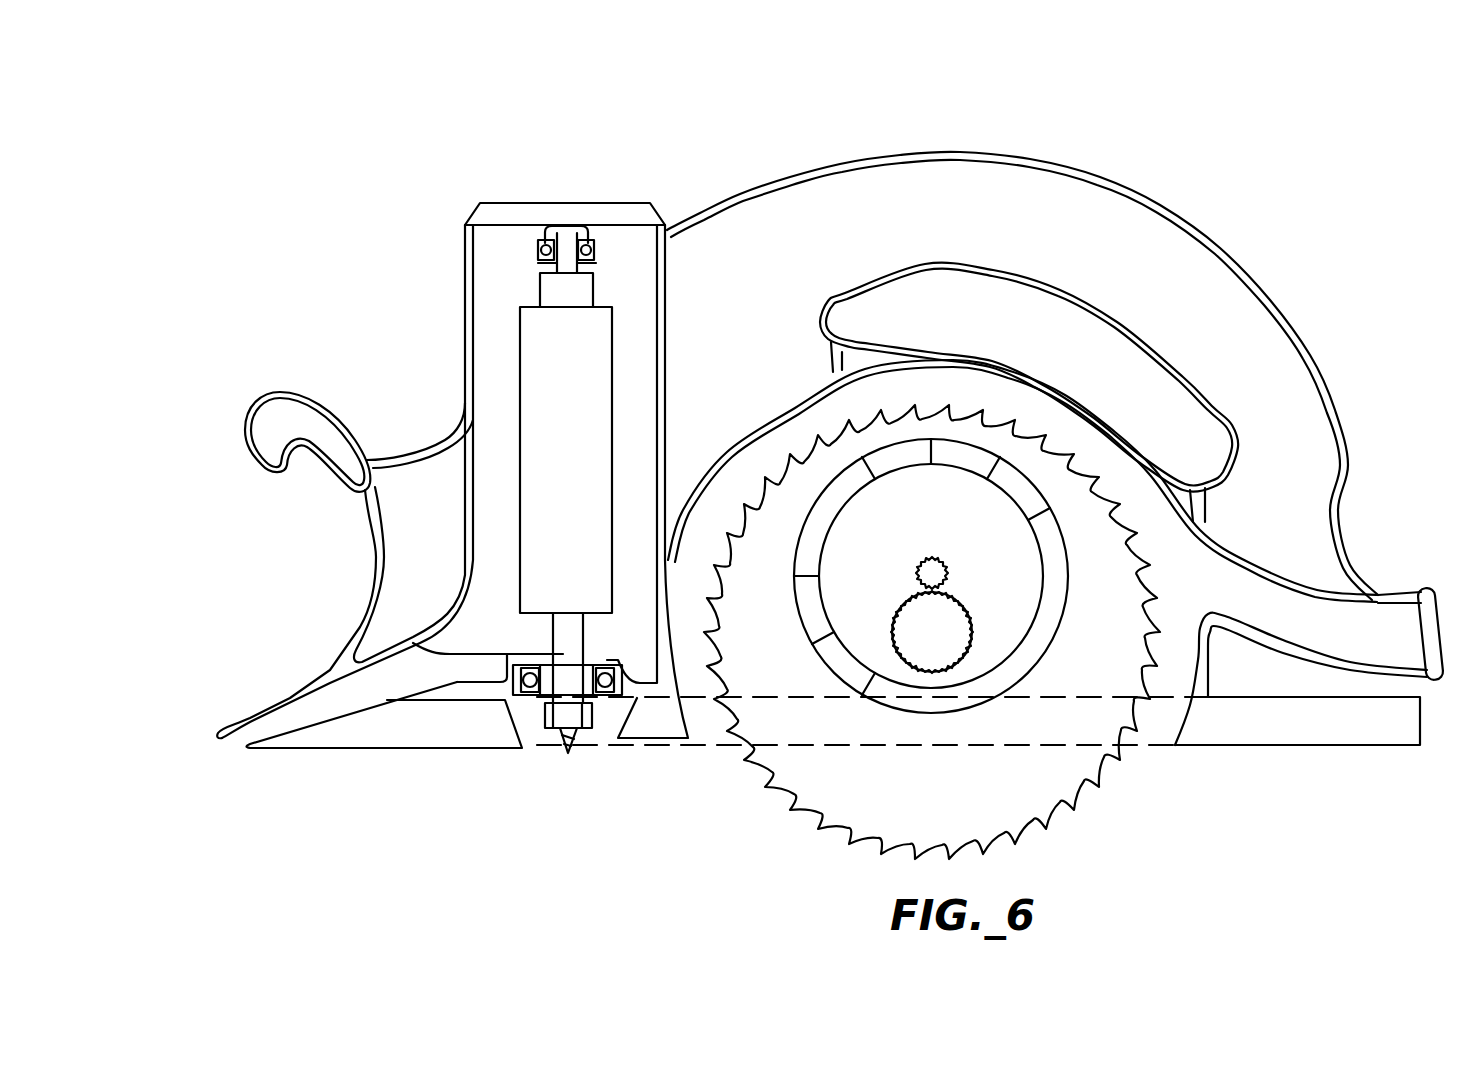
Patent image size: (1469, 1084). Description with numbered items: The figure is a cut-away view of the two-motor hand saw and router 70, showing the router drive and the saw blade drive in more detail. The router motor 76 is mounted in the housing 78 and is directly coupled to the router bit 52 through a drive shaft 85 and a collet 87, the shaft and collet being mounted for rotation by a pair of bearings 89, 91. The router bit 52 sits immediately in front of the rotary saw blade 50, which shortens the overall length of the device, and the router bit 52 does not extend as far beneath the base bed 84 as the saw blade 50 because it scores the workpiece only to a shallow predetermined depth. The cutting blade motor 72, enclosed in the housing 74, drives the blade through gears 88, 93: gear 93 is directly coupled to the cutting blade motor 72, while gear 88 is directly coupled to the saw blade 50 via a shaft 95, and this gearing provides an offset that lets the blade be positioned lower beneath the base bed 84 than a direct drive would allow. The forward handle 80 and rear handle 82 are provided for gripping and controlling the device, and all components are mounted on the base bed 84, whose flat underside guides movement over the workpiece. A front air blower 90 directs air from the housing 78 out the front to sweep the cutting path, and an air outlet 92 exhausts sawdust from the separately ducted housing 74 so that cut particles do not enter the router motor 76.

The rotary saw blade 50 is at (1065, 810).
The router bit 52 is at (568, 753).
The hand saw and router 70 is at (1055, 373).
The cutting blade motor 72 is at (897, 536).
The housing 74 is at (1055, 385).
The router motor 76 is at (545, 378).
The housing 78 is at (465, 247).
The forward handle 80 is at (248, 415).
The rear handle 82 is at (1165, 210).
The base bed 84 is at (1300, 745).
The drive shaft 85 is at (417, 640).
The collet 87 is at (548, 714).
The gear 88 is at (892, 649).
The bearing 89 is at (592, 243).
The front air blower 90 is at (218, 740).
The bearing 91 is at (640, 688).
The air outlet 92 is at (1363, 637).
The gear 93 is at (932, 557).
The shaft 95 is at (968, 602).